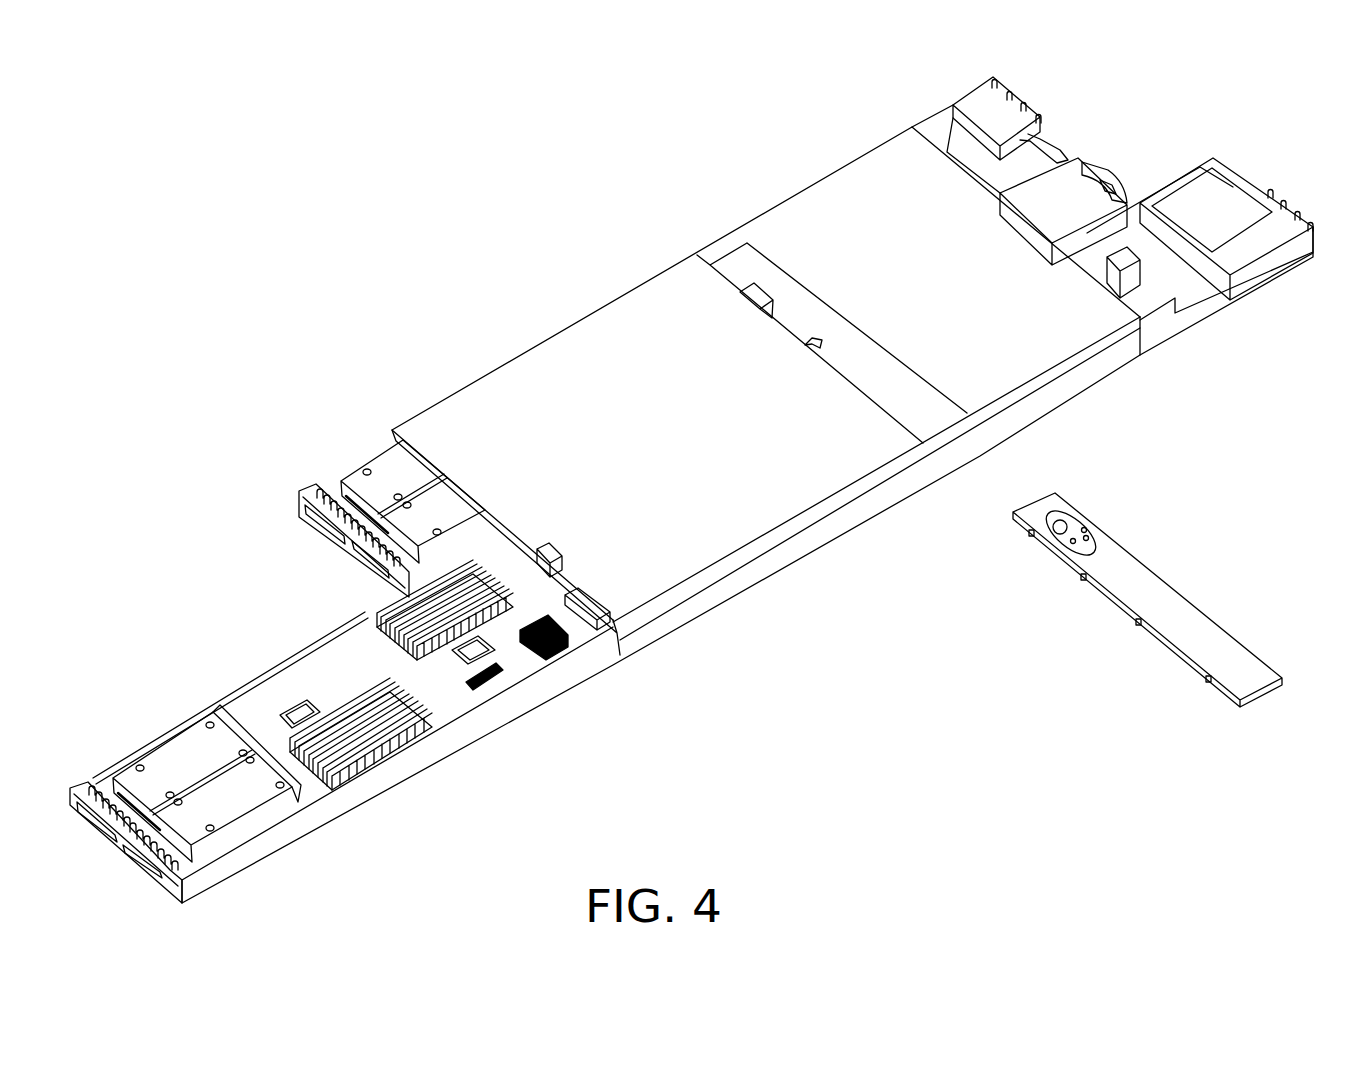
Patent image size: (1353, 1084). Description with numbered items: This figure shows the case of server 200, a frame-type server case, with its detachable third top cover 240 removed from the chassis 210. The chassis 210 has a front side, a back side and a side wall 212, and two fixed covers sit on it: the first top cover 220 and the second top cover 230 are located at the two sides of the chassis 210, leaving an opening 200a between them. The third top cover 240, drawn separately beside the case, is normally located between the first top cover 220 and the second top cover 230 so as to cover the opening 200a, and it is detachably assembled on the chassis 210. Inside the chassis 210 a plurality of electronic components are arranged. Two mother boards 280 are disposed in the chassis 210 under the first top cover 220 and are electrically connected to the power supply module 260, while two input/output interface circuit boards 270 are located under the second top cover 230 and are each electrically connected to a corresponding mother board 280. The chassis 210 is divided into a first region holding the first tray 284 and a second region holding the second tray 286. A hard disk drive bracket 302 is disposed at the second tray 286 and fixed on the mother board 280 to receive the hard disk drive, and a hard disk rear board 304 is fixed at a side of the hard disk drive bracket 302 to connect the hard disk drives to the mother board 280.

The case of server 200 is at (1030, 632).
The opening 200a is at (753, 269).
The chassis 210 is at (683, 607).
The side wall 212 is at (900, 483).
The first top cover 220 is at (802, 482).
The second top cover 230 is at (870, 197).
The third top cover 240 is at (1147, 580).
The power supply module 260 is at (1077, 193).
The input/output interface circuit board 270 is at (1227, 178).
The mother board 280 is at (237, 843).
The first tray 284 is at (1238, 293).
The second tray 286 is at (420, 763).
The hard disk drive bracket 302 is at (167, 758).
The hard disk rear board 304 is at (222, 712).